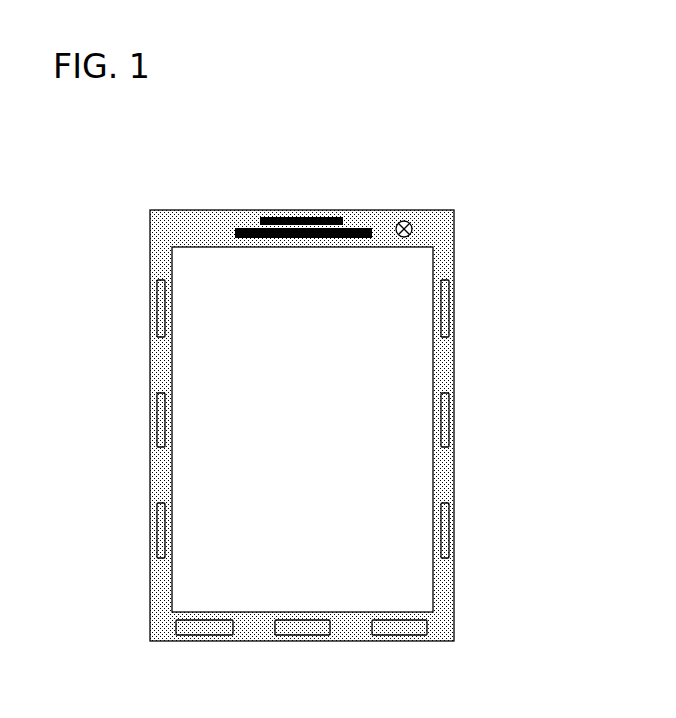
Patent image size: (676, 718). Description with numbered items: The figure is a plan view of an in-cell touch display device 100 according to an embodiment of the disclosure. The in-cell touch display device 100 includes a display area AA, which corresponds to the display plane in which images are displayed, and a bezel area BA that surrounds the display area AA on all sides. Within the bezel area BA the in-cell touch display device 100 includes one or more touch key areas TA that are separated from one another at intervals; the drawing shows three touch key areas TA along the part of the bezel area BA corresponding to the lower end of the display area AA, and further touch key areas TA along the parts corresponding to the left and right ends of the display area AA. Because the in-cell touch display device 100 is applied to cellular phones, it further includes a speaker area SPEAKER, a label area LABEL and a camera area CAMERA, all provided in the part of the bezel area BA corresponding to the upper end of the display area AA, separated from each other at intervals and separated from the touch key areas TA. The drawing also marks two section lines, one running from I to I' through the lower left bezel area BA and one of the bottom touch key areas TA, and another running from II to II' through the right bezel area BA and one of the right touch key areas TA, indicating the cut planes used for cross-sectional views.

The in-cell touch display device 100 is at (113, 166).
The bezel area BA is at (150, 212).
The display area AA is at (178, 258).
The touch key area TA is at (157, 310).
The label area LABEL is at (238, 228).
The speaker area SPEAKER is at (334, 217).
The camera area CAMERA is at (412, 229).
The section line I is at (147, 609).
The section line I' is at (145, 655).
The section line II is at (423, 544).
The section line II' is at (485, 544).